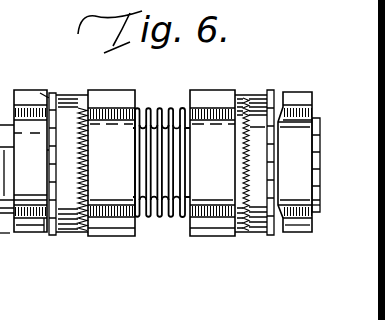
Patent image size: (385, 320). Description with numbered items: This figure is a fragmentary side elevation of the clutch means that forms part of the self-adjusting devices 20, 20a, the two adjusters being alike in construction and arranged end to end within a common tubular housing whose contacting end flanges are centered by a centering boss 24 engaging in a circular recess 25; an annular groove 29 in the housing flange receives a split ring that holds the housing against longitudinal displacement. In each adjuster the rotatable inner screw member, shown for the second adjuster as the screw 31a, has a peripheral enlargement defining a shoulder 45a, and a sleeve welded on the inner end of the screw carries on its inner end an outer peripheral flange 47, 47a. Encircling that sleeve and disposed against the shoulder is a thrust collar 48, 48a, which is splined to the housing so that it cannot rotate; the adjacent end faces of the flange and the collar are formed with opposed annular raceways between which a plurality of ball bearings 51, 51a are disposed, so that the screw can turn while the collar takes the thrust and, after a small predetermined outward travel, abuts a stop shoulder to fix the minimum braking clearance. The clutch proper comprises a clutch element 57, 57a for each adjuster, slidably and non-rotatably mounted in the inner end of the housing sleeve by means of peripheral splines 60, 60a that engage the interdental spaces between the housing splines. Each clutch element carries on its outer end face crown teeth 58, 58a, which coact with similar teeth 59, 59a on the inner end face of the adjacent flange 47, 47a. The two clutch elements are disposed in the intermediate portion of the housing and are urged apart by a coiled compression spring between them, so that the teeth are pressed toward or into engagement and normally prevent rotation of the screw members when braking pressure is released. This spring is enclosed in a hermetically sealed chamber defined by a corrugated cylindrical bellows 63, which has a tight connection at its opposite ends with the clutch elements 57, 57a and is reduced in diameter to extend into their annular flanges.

The self-adjusting device 20 is at (29, 88).
The self-adjusting device 20a is at (295, 90).
The centering boss 24 is at (11, 193).
The circular recess 25 is at (11, 245).
The annular groove 29 is at (13, 273).
The inner screw member 31a is at (317, 232).
The shoulder 45a is at (321, 118).
The outer peripheral flange 47 is at (72, 100).
The outer peripheral flange 47a is at (252, 237).
The thrust collar 48 is at (27, 132).
The thrust collar 48a is at (292, 227).
The ball bearings 51 is at (55, 212).
The ball bearings 51a is at (271, 105).
The clutch element 57 is at (110, 197).
The clutch element 57a is at (222, 194).
The crown teeth 58 is at (86, 157).
The crown teeth 58a is at (246, 157).
The crown teeth 59 is at (80, 155).
The crown teeth 59a is at (250, 166).
The splines 60 is at (112, 100).
The splines 60a is at (209, 90).
The corrugated cylindrical bellows 63 is at (164, 107).